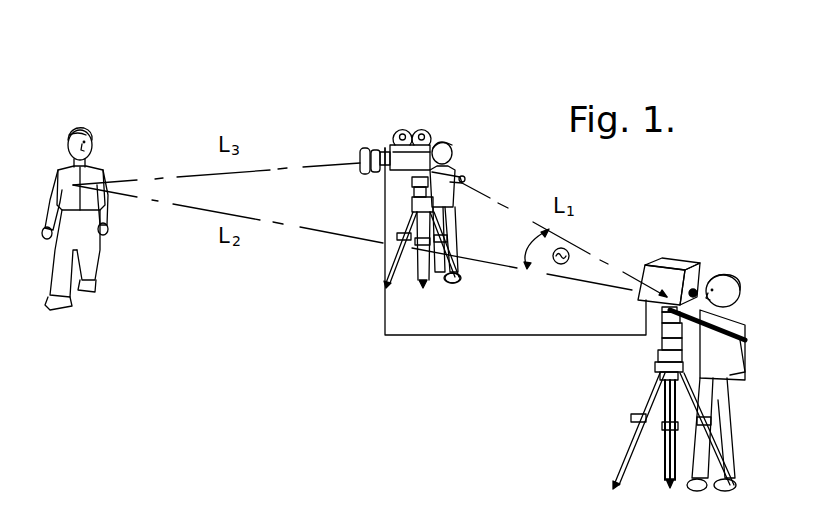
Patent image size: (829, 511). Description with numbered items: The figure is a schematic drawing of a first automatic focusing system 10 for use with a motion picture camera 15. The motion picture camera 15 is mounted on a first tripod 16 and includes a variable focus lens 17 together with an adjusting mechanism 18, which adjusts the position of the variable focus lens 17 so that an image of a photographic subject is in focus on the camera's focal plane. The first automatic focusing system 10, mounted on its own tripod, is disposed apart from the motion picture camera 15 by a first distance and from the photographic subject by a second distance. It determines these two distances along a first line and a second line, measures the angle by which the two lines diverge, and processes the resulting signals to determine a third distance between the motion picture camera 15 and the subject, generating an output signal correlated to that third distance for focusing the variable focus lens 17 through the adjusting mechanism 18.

The first automatic focusing system 10 is at (701, 254).
The motion picture camera 15 is at (425, 131).
The first tripod 16 is at (387, 256).
The variable focus lens 17 is at (370, 153).
The adjusting mechanism 18 is at (381, 141).